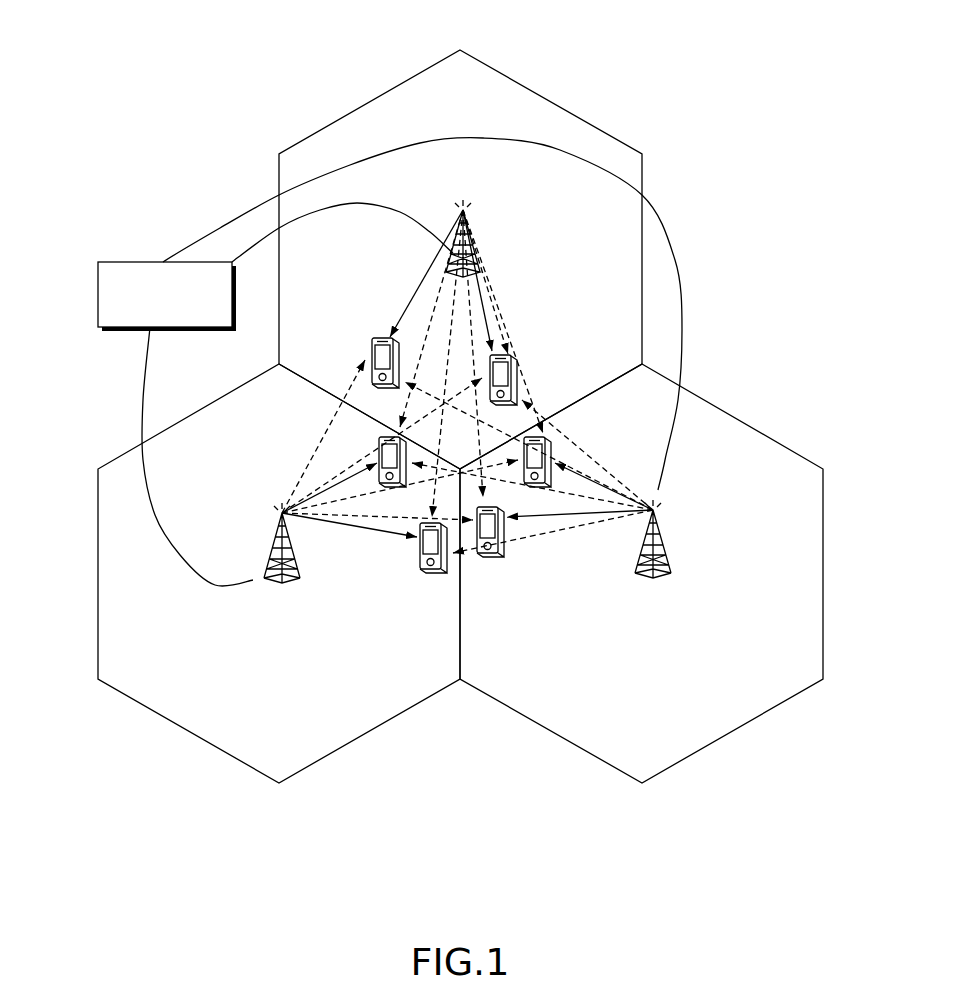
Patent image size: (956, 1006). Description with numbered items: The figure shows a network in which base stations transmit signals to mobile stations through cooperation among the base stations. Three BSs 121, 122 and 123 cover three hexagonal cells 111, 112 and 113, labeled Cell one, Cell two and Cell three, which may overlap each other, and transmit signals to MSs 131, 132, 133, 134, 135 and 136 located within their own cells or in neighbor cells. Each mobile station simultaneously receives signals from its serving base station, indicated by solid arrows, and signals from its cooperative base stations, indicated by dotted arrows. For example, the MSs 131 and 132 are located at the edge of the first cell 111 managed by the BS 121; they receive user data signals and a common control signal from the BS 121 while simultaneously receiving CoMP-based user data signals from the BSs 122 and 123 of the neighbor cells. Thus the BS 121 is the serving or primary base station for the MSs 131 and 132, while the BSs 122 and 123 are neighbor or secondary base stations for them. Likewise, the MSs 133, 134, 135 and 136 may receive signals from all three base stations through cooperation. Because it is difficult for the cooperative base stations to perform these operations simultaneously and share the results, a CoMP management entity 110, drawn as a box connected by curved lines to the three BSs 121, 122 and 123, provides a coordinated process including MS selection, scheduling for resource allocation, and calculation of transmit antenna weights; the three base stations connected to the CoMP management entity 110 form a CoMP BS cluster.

The CoMP management entity 110 is at (128, 260).
The cell 111 is at (280, 783).
The cell 112 is at (642, 783).
The cell 113 is at (460, 50).
The BS 121 is at (268, 552).
The BS 122 is at (668, 543).
The BS 123 is at (482, 244).
The MS 131 is at (378, 440).
The MS 132 is at (418, 552).
The MS 133 is at (504, 552).
The MS 134 is at (552, 445).
The MS 135 is at (372, 352).
The MS 136 is at (519, 374).